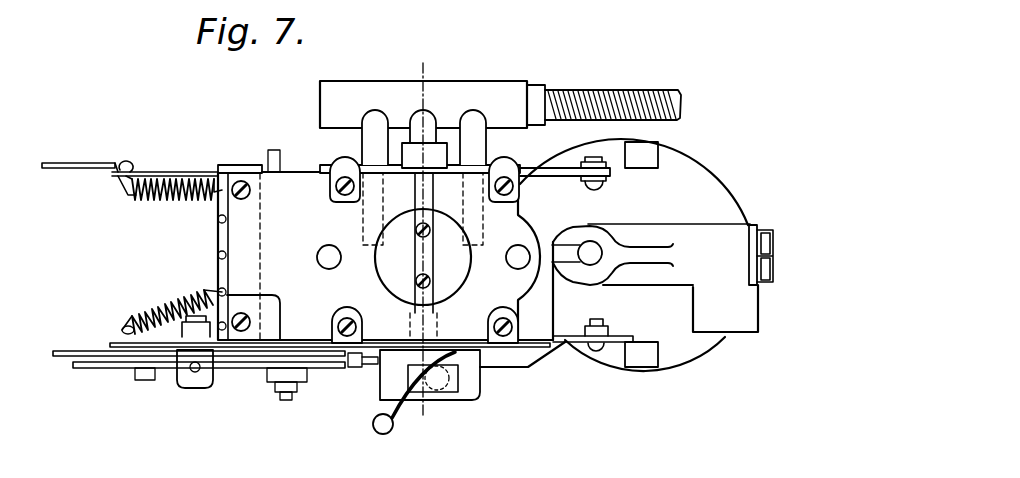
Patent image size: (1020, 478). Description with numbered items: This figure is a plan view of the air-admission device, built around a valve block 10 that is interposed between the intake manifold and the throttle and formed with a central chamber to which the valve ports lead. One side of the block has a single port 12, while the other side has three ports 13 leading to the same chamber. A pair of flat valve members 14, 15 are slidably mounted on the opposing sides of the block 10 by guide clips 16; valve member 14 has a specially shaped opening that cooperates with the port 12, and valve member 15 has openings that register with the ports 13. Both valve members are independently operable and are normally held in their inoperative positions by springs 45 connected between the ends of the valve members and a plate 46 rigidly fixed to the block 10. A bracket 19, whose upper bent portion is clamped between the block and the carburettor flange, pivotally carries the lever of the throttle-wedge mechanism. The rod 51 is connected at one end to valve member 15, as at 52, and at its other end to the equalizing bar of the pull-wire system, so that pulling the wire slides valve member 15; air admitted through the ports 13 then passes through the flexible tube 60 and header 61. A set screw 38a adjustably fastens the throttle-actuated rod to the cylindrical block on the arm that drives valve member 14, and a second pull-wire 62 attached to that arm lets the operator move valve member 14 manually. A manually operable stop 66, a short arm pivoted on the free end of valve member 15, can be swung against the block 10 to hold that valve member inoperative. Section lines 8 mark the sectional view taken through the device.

The circular base / section arrows 8 is at (397, 63).
The valve block 10 is at (293, 184).
The port 12 is at (412, 314).
The ports 13 is at (395, 202).
The valve member 14 is at (559, 343).
The valve member 15 is at (522, 192).
The guide clips 16 is at (341, 171).
The bracket 19 is at (545, 302).
The set screw 38a is at (197, 375).
The springs 45 is at (163, 201).
The plate 46 is at (218, 236).
The rod 51 is at (84, 158).
The connection of rod 51 to valve member 15 52 is at (119, 166).
The flexible tube 60 is at (562, 92).
The header 61 is at (472, 92).
The second pull-wire 62 is at (86, 340).
The manually operable stop 66 is at (607, 179).